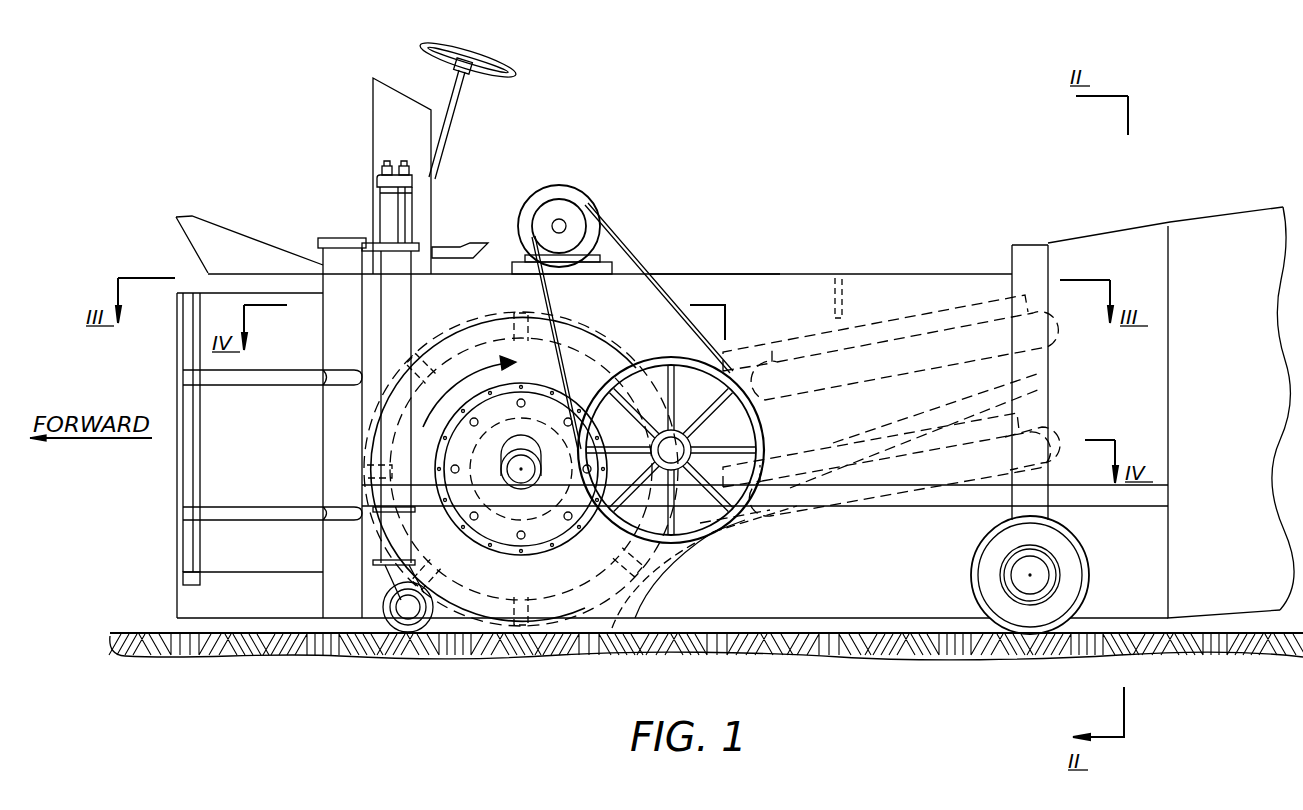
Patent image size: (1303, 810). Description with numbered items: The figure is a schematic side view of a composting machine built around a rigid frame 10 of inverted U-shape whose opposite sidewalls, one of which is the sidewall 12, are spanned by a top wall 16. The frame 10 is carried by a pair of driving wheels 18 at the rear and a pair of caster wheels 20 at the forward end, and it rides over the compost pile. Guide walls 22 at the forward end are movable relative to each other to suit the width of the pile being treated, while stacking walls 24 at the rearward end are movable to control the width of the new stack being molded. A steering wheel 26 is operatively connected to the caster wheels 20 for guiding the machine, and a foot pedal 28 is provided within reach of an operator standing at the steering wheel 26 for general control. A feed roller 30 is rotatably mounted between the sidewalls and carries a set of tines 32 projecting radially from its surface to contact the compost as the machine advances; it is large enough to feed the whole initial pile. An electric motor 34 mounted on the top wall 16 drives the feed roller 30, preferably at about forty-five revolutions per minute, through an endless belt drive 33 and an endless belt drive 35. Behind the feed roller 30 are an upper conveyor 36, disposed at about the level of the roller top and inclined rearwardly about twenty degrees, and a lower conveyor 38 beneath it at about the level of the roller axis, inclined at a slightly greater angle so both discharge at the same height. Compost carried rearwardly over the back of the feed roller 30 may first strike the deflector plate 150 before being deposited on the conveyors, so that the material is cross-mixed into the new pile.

The rigid frame 10 is at (812, 595).
The sidewall 12 is at (790, 290).
The top wall 16 is at (713, 273).
The driving wheels 18 is at (1030, 616).
The caster wheels 20 is at (412, 624).
The guide walls 22 is at (274, 459).
The stacking walls 24 is at (1240, 322).
The steering wheel 26 is at (494, 64).
The foot pedal 28 is at (472, 243).
The feed roller 30 is at (478, 605).
The tines 32 is at (420, 362).
The endless belt drive 33 is at (598, 235).
The electric motor 34 is at (568, 188).
The endless belt drive 35 is at (586, 527).
The upper conveyor 36 is at (897, 365).
The lower conveyor 38 is at (900, 472).
The deflector plate 150 is at (840, 290).